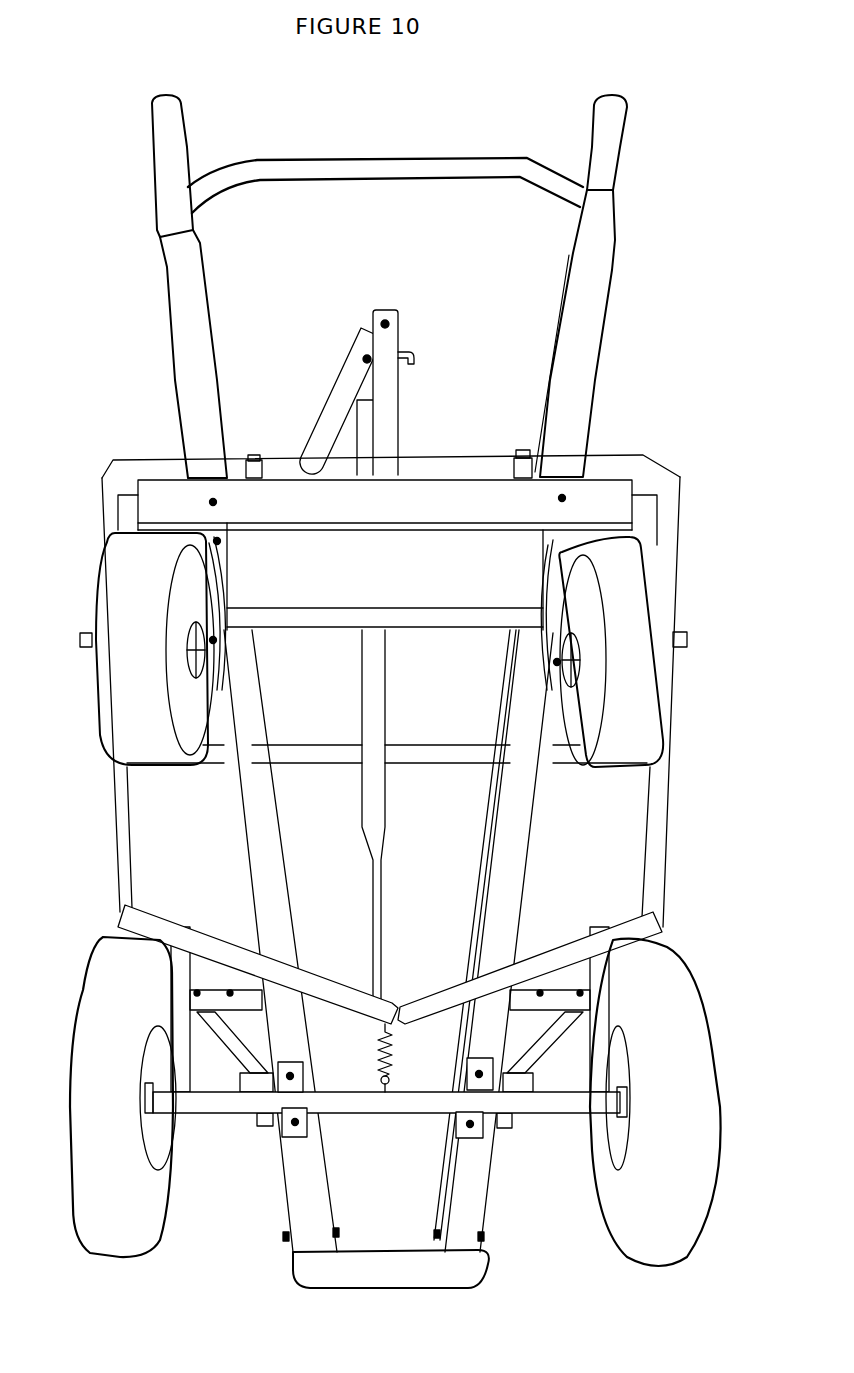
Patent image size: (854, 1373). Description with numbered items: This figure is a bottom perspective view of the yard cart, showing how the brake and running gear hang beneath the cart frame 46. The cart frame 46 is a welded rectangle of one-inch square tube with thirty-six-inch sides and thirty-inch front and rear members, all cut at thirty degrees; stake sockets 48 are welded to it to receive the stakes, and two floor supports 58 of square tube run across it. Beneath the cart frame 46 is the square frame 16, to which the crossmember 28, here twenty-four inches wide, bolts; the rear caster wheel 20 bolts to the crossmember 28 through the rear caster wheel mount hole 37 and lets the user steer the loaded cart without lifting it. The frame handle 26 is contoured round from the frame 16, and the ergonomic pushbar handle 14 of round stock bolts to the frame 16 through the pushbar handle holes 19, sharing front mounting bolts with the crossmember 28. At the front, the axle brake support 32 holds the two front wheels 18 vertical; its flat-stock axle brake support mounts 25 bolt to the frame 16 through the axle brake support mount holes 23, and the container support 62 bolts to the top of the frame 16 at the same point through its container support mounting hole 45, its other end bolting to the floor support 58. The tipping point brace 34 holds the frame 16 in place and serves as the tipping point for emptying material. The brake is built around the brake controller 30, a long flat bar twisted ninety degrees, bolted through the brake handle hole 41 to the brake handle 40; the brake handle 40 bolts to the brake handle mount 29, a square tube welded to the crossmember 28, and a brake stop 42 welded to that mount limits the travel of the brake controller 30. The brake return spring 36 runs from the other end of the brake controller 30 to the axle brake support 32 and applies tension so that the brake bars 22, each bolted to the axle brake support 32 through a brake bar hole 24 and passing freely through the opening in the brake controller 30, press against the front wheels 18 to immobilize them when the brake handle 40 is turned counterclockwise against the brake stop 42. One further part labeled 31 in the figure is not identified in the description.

The ergonomic pushbar handle 14 is at (350, 173).
The frame 16 is at (505, 877).
The front wheels 18 is at (103, 1083).
The ergonomic pushbar handle holes 19 is at (180, 275).
The rear caster wheel 20 is at (215, 638).
The brake bar 22 is at (241, 960).
The axle brake support mount hole 23 is at (465, 1122).
The brake bar hole 24 is at (177, 925).
The axle brake support mount 25 is at (308, 1130).
The frame handle 26 is at (172, 146).
The crossmember 28 is at (487, 567).
The brake handle mount 29 is at (387, 440).
The brake controller 30 is at (373, 777).
The top plate 31 is at (214, 499).
The axle brake support 32 is at (205, 1097).
The tipping point brace 34 is at (383, 1270).
The brake return spring 36 is at (378, 1055).
The rear caster wheel mount hole 37 is at (555, 535).
The brake handle 40 is at (325, 437).
The brake handle hole 41 is at (384, 321).
The brake stop 42 is at (410, 350).
The container support mounting hole 45 is at (543, 992).
The cart frame 46 is at (110, 463).
The stake sockets 48 is at (256, 455).
The floor support 58 is at (314, 760).
The container support 62 is at (242, 1050).